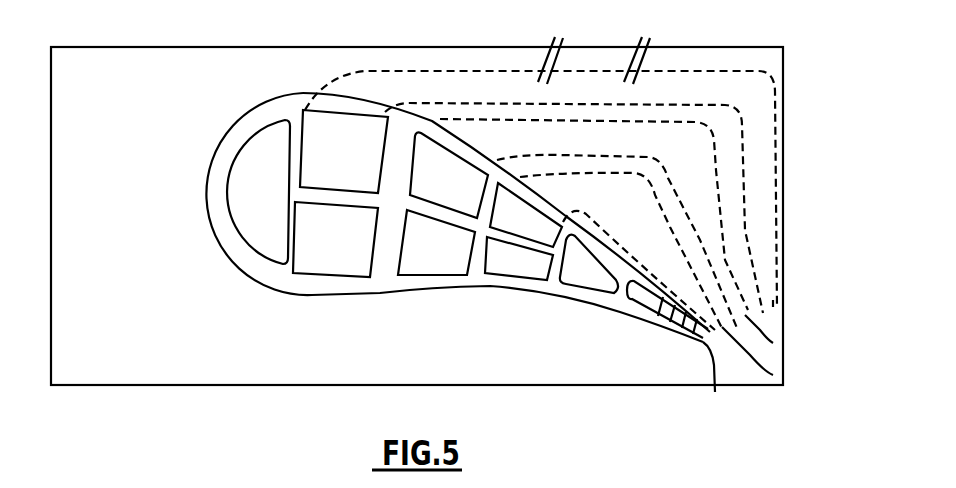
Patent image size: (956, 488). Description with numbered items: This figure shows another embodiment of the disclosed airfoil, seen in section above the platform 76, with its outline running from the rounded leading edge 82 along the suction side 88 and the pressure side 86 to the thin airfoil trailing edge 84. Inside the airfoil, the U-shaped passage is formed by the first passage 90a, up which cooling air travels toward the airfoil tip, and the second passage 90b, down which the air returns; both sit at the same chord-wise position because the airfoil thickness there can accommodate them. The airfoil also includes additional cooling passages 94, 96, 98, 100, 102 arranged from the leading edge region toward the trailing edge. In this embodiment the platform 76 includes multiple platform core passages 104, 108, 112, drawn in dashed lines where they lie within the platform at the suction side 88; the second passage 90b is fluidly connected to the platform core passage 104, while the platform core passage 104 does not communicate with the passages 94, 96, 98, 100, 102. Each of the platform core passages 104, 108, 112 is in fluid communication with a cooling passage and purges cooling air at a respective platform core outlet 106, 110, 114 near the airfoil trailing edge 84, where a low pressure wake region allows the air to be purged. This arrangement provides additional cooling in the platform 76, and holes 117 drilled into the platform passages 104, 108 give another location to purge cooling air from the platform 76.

The platform 76 is at (78, 365).
The leading edge 82 is at (205, 168).
The airfoil trailing edge 84 is at (715, 392).
The pressure side 86 is at (378, 295).
The suction side 88 is at (300, 93).
The first passage 90a is at (427, 258).
The second passage 90b is at (428, 155).
The cooling passage 94 is at (323, 245).
The cooling passage 96 is at (248, 228).
The cooling passage 98 is at (525, 262).
The cooling passage 100 is at (598, 283).
The cooling passage 102 is at (643, 298).
The platform core passage 104 is at (605, 143).
The platform core outlet 106 is at (773, 343).
The platform core passage 108 is at (517, 83).
The platform core outlet 110 is at (773, 305).
The platform core passage 112 is at (587, 193).
The platform core outlet 114 is at (773, 375).
The holes 117 is at (557, 43).